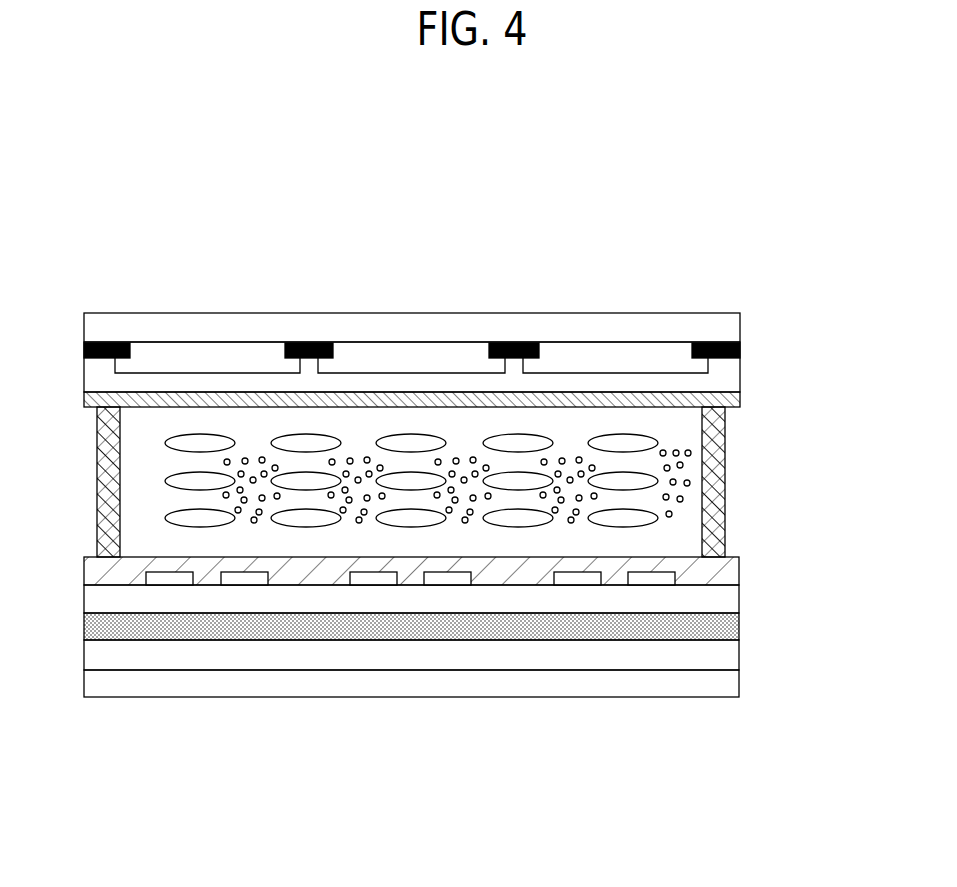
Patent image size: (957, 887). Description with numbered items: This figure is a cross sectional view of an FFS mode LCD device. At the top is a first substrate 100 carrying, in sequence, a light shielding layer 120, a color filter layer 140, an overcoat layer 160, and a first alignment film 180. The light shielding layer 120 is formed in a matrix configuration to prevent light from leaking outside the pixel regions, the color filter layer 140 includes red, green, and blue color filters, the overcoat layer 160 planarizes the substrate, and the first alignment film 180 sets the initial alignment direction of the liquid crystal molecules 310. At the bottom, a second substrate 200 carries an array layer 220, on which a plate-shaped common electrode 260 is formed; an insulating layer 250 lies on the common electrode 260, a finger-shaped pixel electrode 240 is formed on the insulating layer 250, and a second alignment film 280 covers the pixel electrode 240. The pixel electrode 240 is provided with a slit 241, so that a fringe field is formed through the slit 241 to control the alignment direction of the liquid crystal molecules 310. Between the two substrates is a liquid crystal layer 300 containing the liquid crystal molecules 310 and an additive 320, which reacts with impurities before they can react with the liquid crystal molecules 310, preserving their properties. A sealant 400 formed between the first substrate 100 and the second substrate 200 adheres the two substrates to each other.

The first substrate 100 is at (740, 328).
The light shielding layer 120 is at (513, 342).
The color filter layer 140 is at (648, 352).
The overcoat layer 160 is at (740, 370).
The first alignment film 180 is at (740, 391).
The second substrate 200 is at (739, 687).
The array layer 220 is at (739, 658).
The pixel electrode 240 is at (168, 585).
The slit 241 is at (207, 581).
The insulating layer 250 is at (739, 598).
The common electrode 260 is at (739, 628).
The second alignment film 280 is at (739, 569).
The liquid crystal layer 300 is at (531, 480).
The liquid crystal molecules 310 is at (658, 518).
The additive 320 is at (691, 453).
The sealant 400 is at (725, 541).